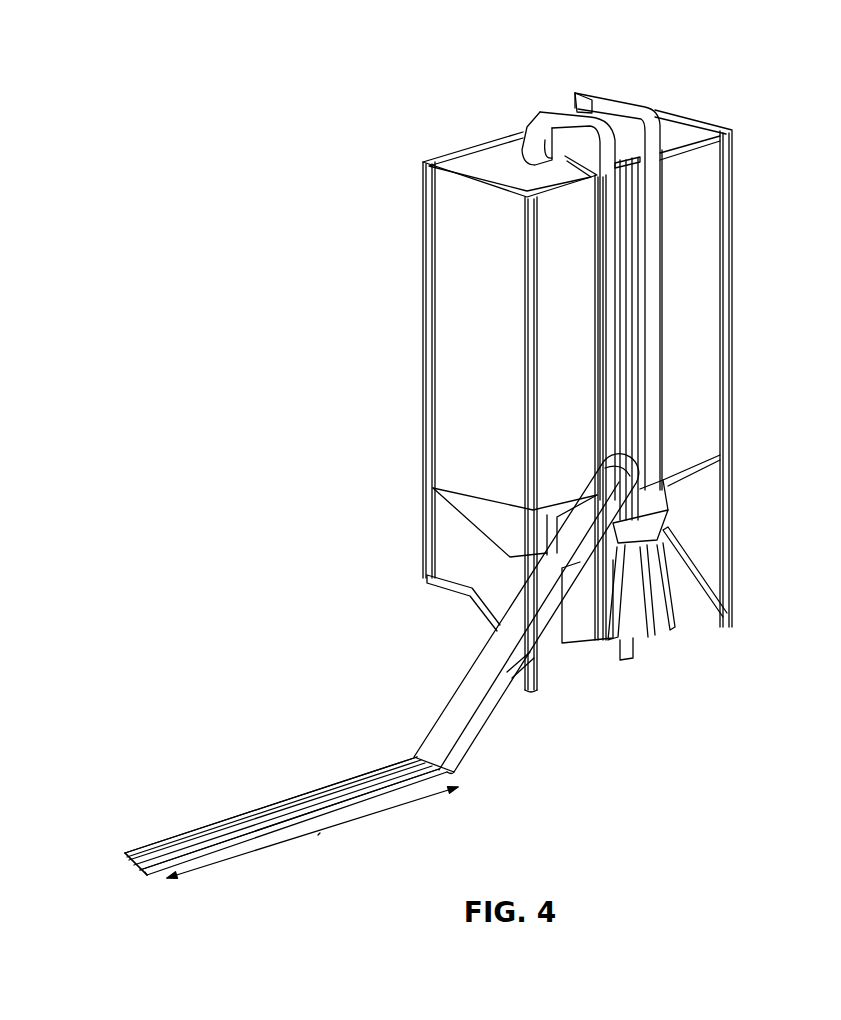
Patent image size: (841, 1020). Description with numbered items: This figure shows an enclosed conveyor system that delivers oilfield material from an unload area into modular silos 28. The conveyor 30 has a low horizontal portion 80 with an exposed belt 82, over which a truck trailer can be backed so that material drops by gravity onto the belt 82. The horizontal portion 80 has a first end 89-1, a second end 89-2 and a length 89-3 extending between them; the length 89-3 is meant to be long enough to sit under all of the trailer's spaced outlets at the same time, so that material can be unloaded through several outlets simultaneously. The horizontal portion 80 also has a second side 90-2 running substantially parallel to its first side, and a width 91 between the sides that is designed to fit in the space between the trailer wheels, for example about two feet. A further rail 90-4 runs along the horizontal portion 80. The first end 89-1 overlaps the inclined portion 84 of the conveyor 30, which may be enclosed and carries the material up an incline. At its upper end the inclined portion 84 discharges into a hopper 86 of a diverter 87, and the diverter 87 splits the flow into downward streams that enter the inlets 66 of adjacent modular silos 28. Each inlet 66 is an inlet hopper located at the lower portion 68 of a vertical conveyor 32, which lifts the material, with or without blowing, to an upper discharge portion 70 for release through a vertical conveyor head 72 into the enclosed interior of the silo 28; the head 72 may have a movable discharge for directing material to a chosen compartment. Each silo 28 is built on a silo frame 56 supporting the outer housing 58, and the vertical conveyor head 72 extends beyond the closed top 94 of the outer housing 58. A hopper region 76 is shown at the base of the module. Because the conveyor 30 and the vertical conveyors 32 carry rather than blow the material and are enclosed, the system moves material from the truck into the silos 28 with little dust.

The modular silo 28 is at (569, 68).
The conveyor 30 is at (368, 693).
The vertical conveyor 32 is at (581, 373).
The silo frame 56 is at (423, 302).
The outer housing 58 is at (452, 367).
The inlet 66 is at (663, 613).
The lower portion 68 is at (499, 586).
The upper discharge portion 70 is at (545, 152).
The vertical conveyor head 72 is at (557, 112).
The hopper 76 is at (510, 558).
The horizontal portion 80 is at (347, 803).
The exposed belt 82 is at (193, 856).
The inclined portion 84 is at (485, 718).
The hopper 86 is at (660, 490).
The diverter 87 is at (712, 580).
The first end 89-1 is at (448, 772).
The second end 89-2 is at (148, 872).
The length 89-3 is at (318, 835).
The second side 90-2 is at (273, 805).
The lower rail 90-4 is at (240, 835).
The width 91 is at (121, 870).
The closed top 94 is at (478, 163).